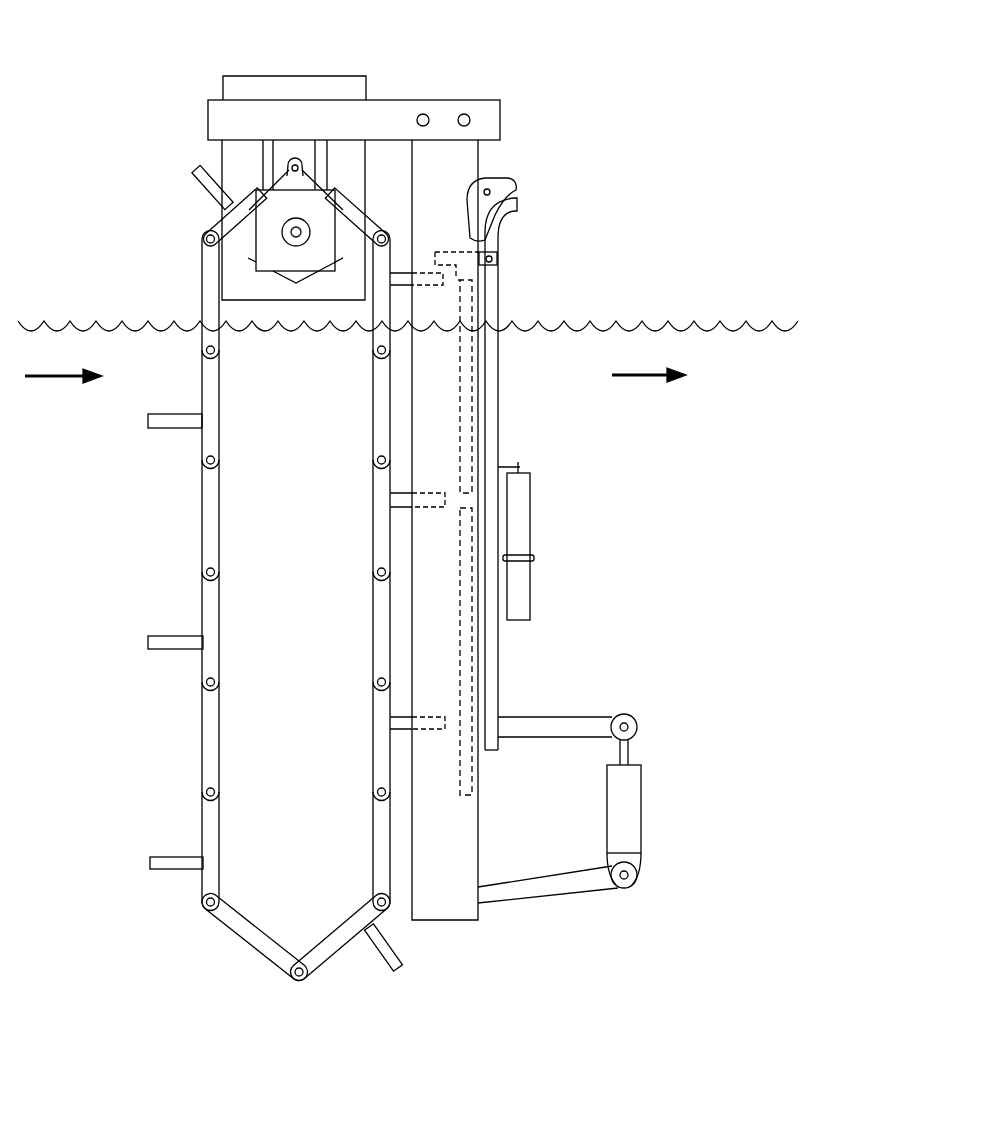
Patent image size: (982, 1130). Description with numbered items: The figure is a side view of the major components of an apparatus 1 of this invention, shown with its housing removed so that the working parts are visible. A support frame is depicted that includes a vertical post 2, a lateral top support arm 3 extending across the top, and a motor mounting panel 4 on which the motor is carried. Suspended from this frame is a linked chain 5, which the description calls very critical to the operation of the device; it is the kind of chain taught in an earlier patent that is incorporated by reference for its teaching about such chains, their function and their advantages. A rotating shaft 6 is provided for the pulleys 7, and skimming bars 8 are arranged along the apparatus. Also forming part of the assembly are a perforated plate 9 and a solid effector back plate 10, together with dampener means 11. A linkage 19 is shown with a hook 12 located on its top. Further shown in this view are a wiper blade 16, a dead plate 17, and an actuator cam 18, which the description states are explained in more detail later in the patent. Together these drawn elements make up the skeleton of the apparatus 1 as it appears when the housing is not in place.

The apparatus 1 is at (608, 160).
The vertical post 2 is at (472, 158).
The lateral top support arm 3 is at (397, 105).
The motor mounting panel 4 is at (307, 80).
The linked chain 5 is at (208, 228).
The rotating shaft 6 is at (297, 236).
The pulleys 7 is at (347, 232).
The skimming bars 8 is at (155, 636).
The perforated plate 9 is at (465, 797).
The solid effector back plate 10 is at (492, 752).
The dampener means 11 is at (634, 802).
The hook 12 is at (472, 203).
The wiper blade 16 is at (490, 283).
The dead plate 17 is at (463, 362).
The actuator cam 18 is at (518, 204).
The linkage 19 is at (492, 418).